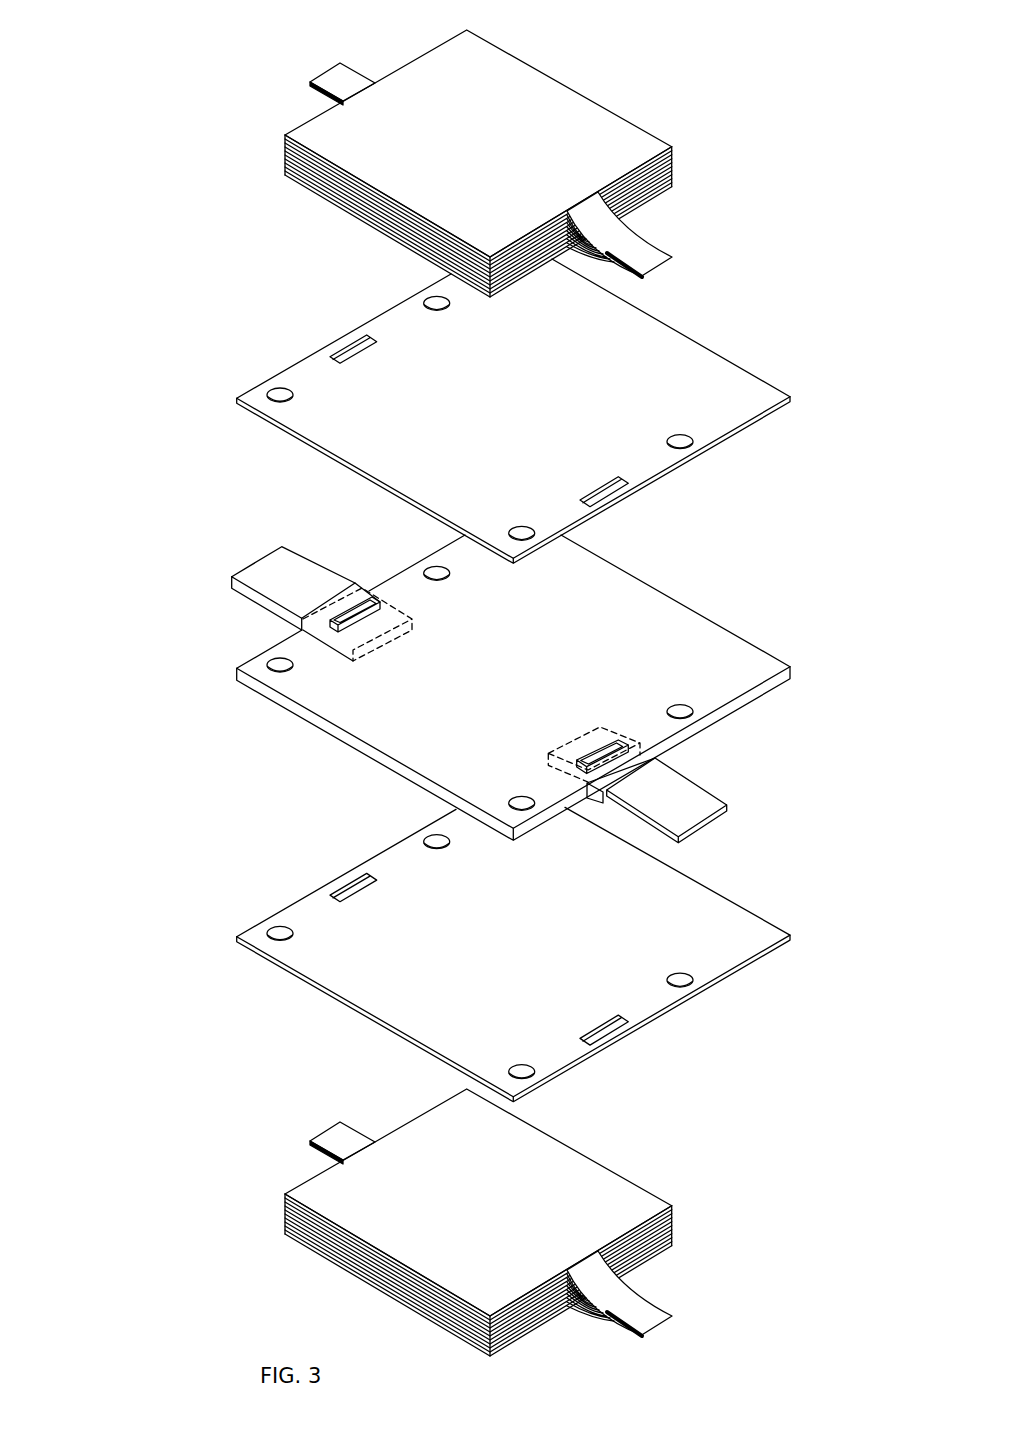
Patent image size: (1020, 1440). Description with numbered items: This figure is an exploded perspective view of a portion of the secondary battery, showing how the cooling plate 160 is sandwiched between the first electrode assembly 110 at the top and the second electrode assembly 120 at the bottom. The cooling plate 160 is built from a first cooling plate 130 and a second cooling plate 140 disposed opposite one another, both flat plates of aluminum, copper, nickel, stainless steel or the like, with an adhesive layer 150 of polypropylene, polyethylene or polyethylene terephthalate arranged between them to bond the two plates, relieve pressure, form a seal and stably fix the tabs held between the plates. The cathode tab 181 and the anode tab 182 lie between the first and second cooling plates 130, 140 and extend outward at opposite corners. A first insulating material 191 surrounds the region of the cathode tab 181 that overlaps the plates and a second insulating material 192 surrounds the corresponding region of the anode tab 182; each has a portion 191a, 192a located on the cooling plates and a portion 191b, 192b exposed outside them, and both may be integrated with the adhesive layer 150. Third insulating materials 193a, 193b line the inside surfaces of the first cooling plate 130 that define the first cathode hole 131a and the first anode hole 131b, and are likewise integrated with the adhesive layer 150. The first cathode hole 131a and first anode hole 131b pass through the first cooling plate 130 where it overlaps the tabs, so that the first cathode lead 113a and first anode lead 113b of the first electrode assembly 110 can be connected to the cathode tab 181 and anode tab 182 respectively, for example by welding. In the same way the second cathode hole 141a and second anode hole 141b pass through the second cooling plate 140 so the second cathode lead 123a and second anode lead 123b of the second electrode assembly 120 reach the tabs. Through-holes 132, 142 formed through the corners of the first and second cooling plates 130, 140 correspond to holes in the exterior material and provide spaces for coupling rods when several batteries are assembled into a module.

The first electrode assembly 110 is at (517, 154).
The first cathode lead 113a is at (647, 245).
The first anode lead 113b is at (338, 75).
The second electrode assembly 120 is at (478, 1222).
The second cathode lead 123a is at (654, 1293).
The second anode lead 123b is at (295, 1129).
The first cooling plate 130 is at (508, 411).
The first cathode hole 131a is at (603, 478).
The first anode hole 131b is at (330, 372).
The through-hole 132 is at (692, 439).
The second cooling plate 140 is at (508, 954).
The second cathode hole 141a is at (640, 969).
The second anode hole 141b is at (302, 873).
The through-hole 142 is at (728, 995).
The adhesive layer 150 is at (703, 627).
The cooling plate 160 is at (133, 708).
The cathode tab 181 is at (690, 798).
The anode tab 182 is at (263, 567).
The first insulating material 191 is at (133, 593).
The portion of first insulating material 191a is at (607, 730).
The portion of first insulating material 191b is at (644, 763).
The second insulating material 192 is at (133, 485).
The portion of second insulating material 192a is at (395, 613).
The portion of second insulating material 192b is at (346, 613).
The third insulating material 193a is at (575, 765).
The third insulating material 193b is at (345, 630).